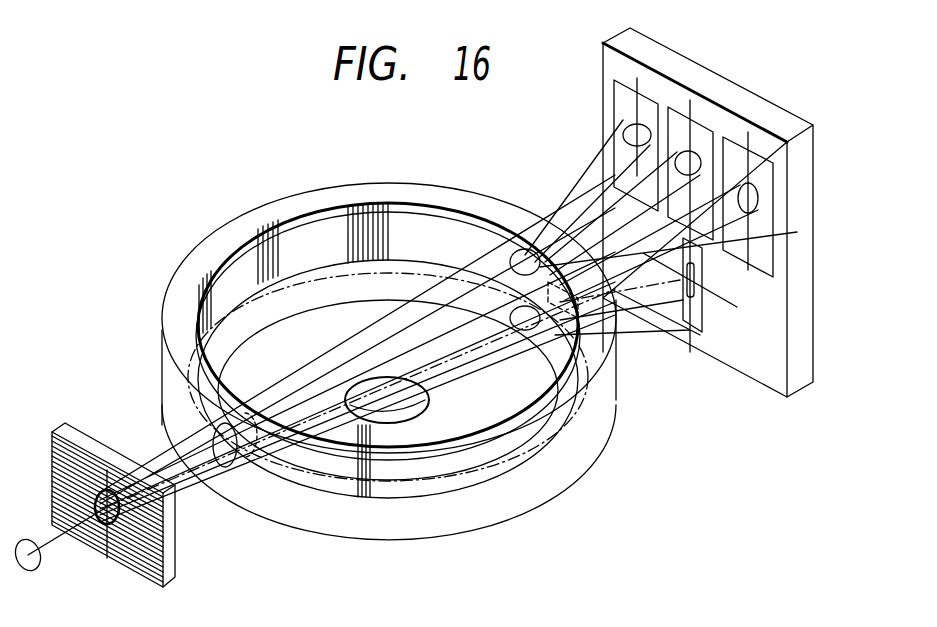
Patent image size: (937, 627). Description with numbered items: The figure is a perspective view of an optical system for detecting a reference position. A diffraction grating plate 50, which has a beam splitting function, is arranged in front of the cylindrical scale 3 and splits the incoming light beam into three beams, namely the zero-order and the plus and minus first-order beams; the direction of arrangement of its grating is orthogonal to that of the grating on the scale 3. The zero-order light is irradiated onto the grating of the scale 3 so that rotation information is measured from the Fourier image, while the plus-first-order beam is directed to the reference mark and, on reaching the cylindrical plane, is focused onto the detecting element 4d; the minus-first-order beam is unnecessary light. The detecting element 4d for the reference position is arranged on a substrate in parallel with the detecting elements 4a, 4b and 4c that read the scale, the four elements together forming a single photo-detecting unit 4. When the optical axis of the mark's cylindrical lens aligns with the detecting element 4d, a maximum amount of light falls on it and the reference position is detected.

The cylindrical scale 3 is at (578, 473).
The photo-detecting unit 4 is at (732, 92).
The detecting element 4a is at (623, 100).
The detecting element 4b is at (702, 133).
The detecting element 4c is at (762, 167).
The detecting element 4d is at (700, 313).
The diffraction grating plate 50 is at (178, 570).